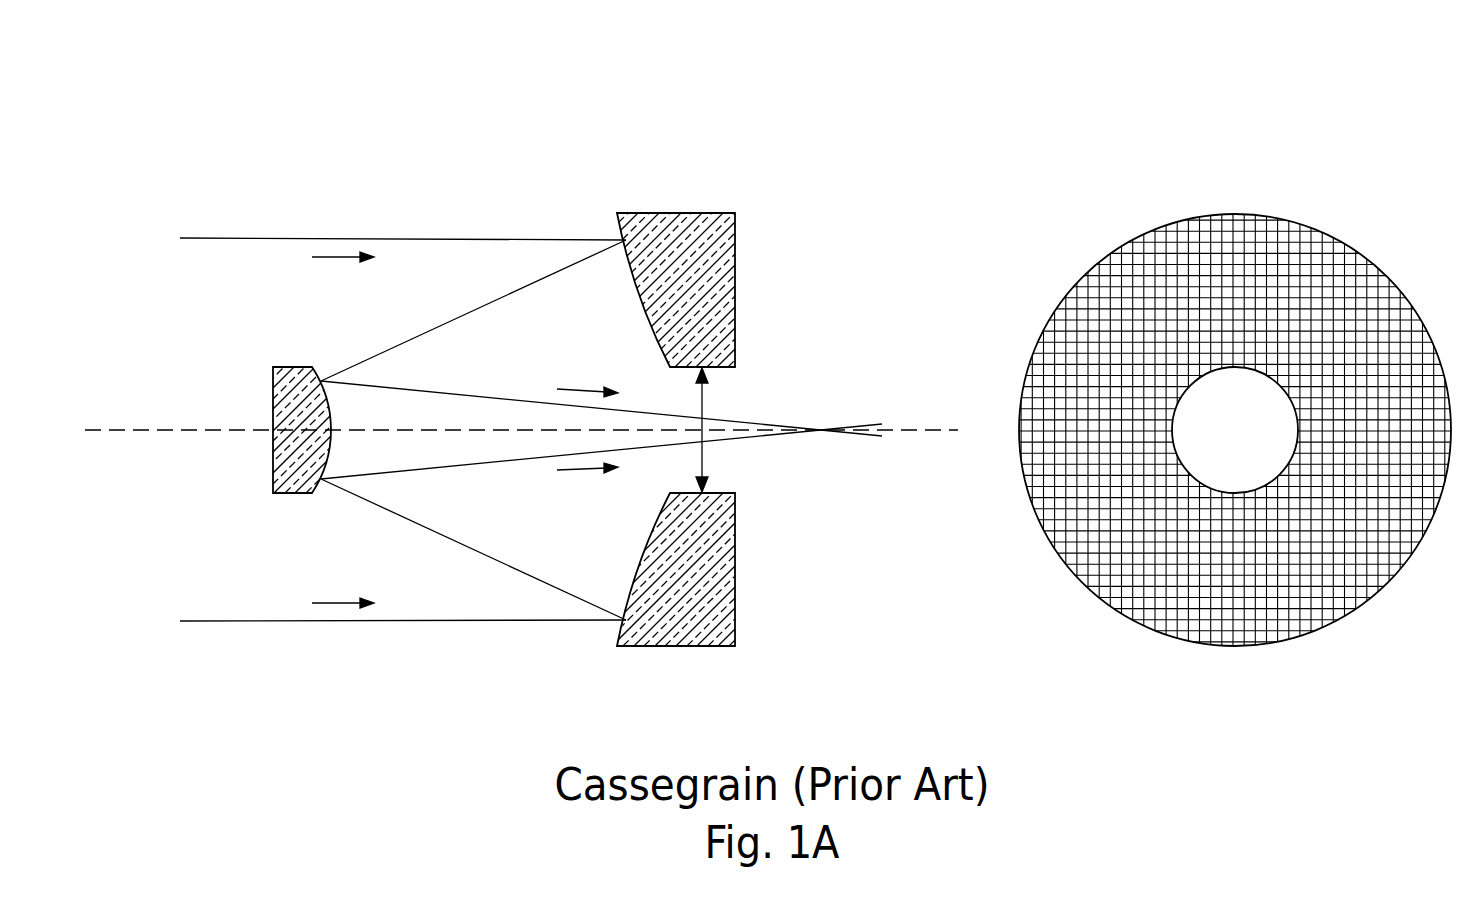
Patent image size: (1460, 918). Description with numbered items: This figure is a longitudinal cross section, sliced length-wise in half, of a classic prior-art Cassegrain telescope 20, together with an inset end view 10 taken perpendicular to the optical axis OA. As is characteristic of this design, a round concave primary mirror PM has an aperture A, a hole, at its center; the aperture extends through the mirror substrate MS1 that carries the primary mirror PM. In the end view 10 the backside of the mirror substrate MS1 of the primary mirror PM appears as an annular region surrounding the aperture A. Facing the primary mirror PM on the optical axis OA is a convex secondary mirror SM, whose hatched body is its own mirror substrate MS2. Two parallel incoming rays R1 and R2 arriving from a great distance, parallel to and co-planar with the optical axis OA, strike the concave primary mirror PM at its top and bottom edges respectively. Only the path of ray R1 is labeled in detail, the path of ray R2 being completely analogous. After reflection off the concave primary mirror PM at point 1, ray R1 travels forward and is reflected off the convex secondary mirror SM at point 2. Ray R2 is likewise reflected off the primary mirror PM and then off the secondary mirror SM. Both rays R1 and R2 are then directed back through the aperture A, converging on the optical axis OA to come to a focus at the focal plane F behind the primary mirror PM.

The end view 10 is at (1308, 203).
The Cassegrain telescope 20 is at (715, 195).
The point 1 is at (628, 264).
The point 2 is at (330, 357).
The primary mirror PM is at (626, 230).
The secondary mirror SM is at (345, 452).
The mirror substrate MS1 is at (716, 286).
The mirror substrate MS2 is at (295, 368).
The ray R1 is at (229, 238).
The ray R2 is at (229, 621).
The optical axis OA is at (150, 430).
The aperture A is at (707, 395).
The focal plane F is at (822, 397).